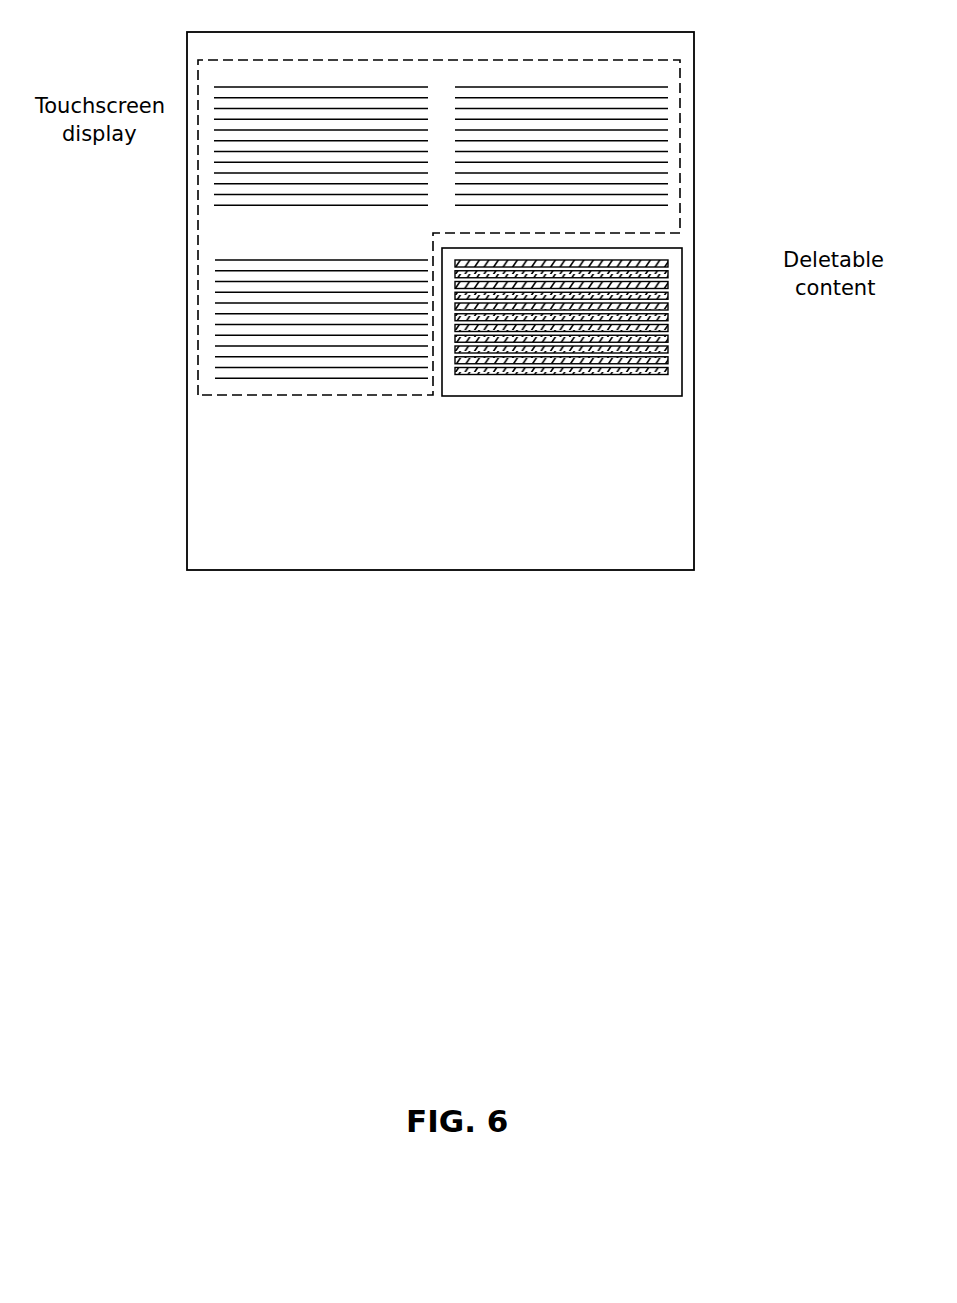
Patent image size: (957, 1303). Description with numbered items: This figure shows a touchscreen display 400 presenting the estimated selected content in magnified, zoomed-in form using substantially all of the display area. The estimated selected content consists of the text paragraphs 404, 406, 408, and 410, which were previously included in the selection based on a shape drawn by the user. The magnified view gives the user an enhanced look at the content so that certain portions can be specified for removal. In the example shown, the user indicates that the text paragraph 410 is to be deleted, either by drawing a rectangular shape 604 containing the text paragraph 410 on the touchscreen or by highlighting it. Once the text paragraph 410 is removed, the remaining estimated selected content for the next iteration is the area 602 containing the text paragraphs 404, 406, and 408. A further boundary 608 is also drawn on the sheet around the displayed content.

The touchscreen display 400 is at (187, 82).
The text paragraph 404 is at (214, 193).
The text paragraph 406 is at (214, 366).
The text paragraph 408 is at (661, 109).
The text paragraph 410 is at (670, 347).
The area 602 is at (681, 226).
The rectangular shape 604 is at (682, 268).
The content boundary 608 is at (694, 50).